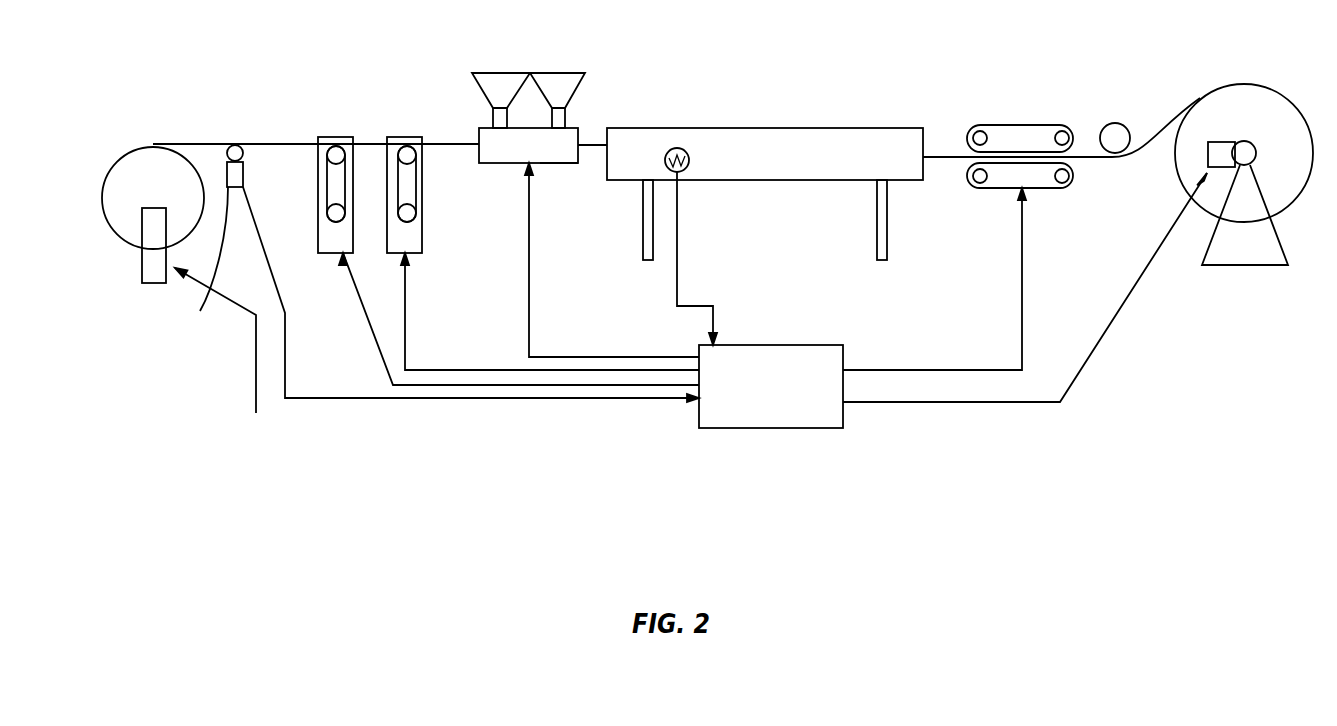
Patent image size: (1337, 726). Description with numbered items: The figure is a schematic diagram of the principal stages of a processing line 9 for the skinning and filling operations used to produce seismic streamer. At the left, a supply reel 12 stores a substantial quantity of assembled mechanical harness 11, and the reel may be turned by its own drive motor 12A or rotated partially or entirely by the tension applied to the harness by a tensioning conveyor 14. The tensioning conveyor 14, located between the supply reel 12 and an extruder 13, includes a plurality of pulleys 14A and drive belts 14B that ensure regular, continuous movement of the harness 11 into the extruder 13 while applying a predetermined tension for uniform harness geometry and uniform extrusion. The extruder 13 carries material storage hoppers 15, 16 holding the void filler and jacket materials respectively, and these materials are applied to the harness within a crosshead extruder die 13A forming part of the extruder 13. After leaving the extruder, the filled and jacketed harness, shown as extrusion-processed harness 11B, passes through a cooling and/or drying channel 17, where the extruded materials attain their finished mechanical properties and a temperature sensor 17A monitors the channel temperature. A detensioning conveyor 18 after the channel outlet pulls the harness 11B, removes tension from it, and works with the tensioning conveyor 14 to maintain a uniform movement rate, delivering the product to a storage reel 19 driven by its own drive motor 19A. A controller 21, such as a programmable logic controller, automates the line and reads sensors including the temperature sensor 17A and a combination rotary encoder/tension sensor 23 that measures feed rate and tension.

The processing line 9 is at (1030, 60).
The mechanical harness 11 is at (253, 143).
The extrusion-processed harness 11B is at (592, 143).
The supply reel 12 is at (122, 155).
The drive motor 12A is at (142, 265).
The extruder 13 is at (503, 163).
The crosshead extruder die 13A is at (550, 163).
The tensioning conveyor 14 is at (405, 137).
The pulleys 14A is at (330, 152).
The drive belts 14B is at (337, 240).
The material storage hopper 15 is at (500, 73).
The material storage hopper 16 is at (558, 73).
The cooling and/or drying channel 17 is at (767, 128).
The temperature sensor 17A is at (683, 172).
The detensioning conveyor 18 is at (1018, 125).
The storage reel 19 is at (1245, 83).
The drive motor 19A is at (1210, 170).
The controller 21 is at (772, 428).
The combination rotary encoder/tension sensor 23 is at (200, 311).